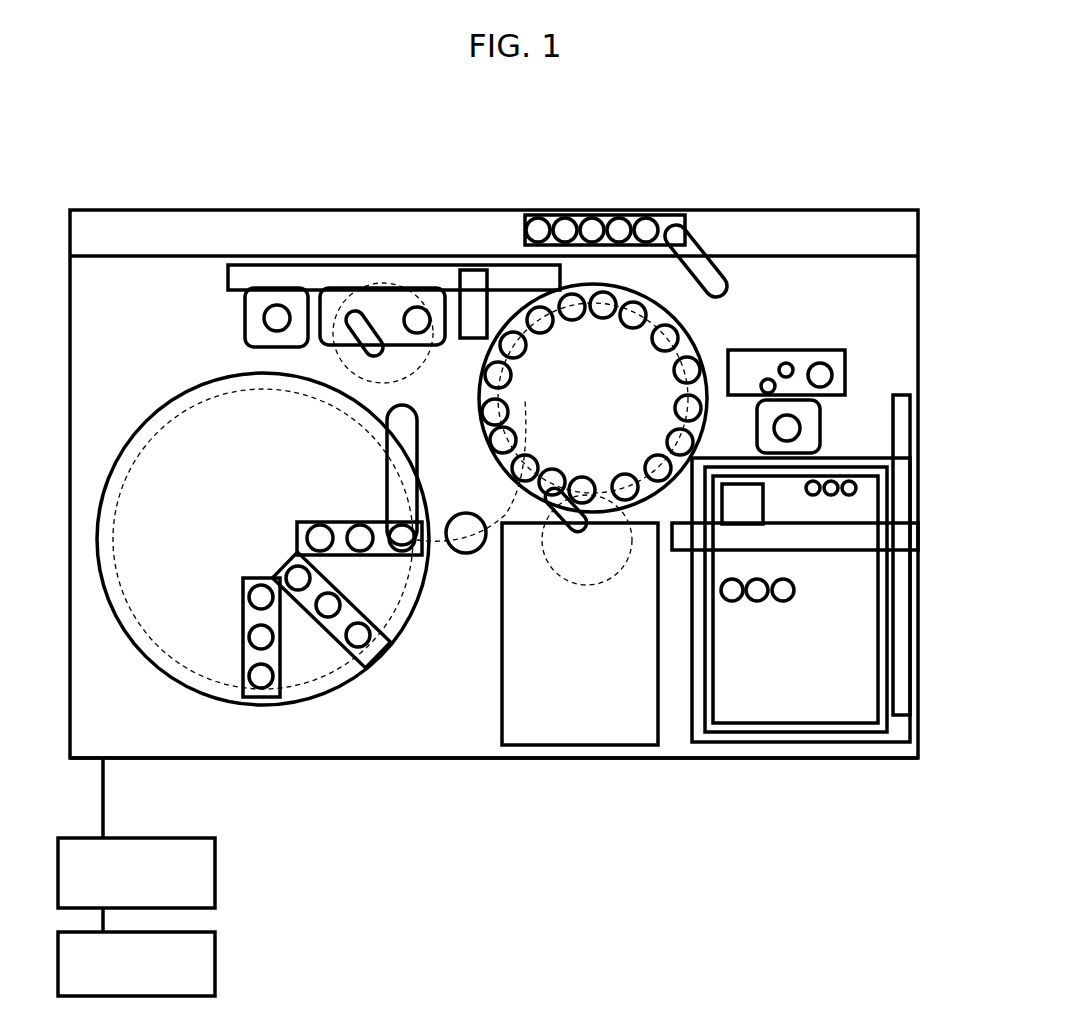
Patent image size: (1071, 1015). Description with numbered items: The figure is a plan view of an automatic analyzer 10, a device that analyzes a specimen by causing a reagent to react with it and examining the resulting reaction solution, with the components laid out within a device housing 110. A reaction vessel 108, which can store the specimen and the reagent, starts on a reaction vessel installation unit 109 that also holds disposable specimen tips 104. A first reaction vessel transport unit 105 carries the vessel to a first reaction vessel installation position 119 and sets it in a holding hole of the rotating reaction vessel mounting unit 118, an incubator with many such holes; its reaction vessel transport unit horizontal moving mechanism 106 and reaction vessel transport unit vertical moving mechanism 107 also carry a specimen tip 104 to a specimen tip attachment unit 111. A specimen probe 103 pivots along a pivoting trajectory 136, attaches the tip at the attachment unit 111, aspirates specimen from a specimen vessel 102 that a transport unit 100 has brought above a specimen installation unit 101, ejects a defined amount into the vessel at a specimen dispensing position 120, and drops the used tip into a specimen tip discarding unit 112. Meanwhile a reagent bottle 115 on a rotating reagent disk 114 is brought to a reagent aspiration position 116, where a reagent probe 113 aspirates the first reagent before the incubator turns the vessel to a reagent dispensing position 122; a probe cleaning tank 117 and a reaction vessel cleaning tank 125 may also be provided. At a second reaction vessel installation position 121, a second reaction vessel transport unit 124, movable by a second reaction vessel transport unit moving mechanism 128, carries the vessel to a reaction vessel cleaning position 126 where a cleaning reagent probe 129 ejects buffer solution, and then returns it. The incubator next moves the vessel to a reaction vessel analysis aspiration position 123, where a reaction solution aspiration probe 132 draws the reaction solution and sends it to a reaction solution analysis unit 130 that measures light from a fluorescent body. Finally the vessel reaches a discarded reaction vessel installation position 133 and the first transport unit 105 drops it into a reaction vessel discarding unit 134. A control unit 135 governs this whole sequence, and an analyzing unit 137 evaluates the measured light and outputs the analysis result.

The automatic analyzer 10 is at (915, 165).
The transport unit 100 is at (765, 223).
The specimen installation unit 101 is at (548, 228).
The specimen vessel 102 is at (597, 228).
The specimen probe 103 is at (700, 245).
The specimen tip 104 is at (858, 487).
The first reaction vessel transport unit 105 is at (740, 520).
The reaction vessel transport unit horizontal moving mechanism 106 is at (827, 543).
The reaction vessel transport unit vertical moving mechanism 107 is at (900, 673).
The reaction vessel 108 is at (793, 585).
The reaction vessel installation unit 109 is at (837, 648).
The device housing 110 is at (447, 713).
The specimen tip attachment unit 111 is at (768, 380).
The specimen tip discarding unit 112 is at (835, 350).
The reagent probe 113 is at (398, 468).
The reagent disk 114 is at (373, 533).
The reagent bottle 115 is at (255, 655).
The reagent aspiration position 116 is at (403, 557).
The probe cleaning tank 117 is at (465, 553).
The reaction vessel mounting unit 118 is at (562, 412).
The first reaction vessel installation position 119 is at (683, 370).
The specimen dispensing position 120 is at (637, 313).
The second reaction vessel installation position 121 is at (547, 325).
The reagent dispensing position 122 is at (535, 462).
The reaction vessel analysis aspiration position 123 is at (593, 482).
The second reaction vessel transport unit 124 is at (477, 290).
The reaction vessel cleaning tank 125 is at (413, 318).
The reaction vessel cleaning position 126 is at (353, 312).
The second reaction vessel transport unit moving mechanism 128 is at (248, 282).
The cleaning reagent probe 129 is at (364, 350).
The reaction solution analysis unit 130 is at (627, 665).
The reaction solution aspiration probe 132 is at (568, 532).
The discarded reaction vessel installation position 133 is at (673, 438).
The reaction vessel discarding unit 134 is at (847, 372).
The control unit 135 is at (190, 876).
The pivoting trajectory 136 is at (788, 364).
The analyzing unit 137 is at (185, 968).